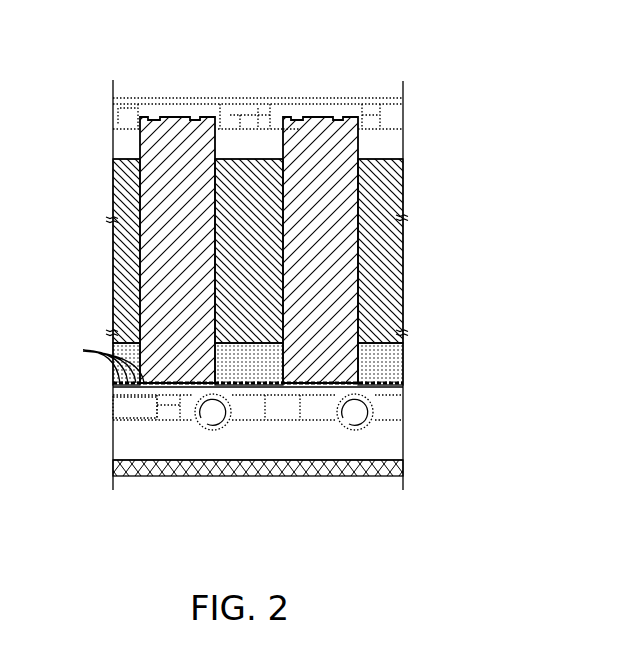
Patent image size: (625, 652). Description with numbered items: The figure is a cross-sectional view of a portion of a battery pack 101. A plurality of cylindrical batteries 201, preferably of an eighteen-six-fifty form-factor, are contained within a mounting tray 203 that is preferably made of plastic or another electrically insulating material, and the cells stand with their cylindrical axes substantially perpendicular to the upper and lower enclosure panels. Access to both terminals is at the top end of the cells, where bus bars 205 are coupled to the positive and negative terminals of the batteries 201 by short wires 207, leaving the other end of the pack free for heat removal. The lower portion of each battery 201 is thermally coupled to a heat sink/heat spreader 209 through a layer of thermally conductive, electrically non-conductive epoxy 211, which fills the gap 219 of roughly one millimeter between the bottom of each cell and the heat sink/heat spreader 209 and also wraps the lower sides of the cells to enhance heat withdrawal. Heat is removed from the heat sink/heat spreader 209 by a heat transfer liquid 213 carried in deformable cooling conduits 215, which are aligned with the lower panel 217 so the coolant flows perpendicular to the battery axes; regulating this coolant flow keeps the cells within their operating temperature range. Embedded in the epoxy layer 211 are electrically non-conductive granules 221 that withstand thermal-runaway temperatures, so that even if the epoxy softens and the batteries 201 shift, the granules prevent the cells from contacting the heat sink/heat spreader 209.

The battery pack 101 is at (479, 91).
The batteries 201 is at (193, 250).
The mounting tray 203 is at (390, 273).
The bus bars 205 is at (294, 108).
The wires 207 is at (332, 113).
The heat sink/heat spreader 209 is at (377, 393).
The thermally conductive epoxy layer 211 is at (393, 363).
The heat transfer liquid 213 is at (210, 413).
The cooling conduits 215 is at (200, 423).
The lower panel 217 is at (350, 471).
The gap 219 is at (376, 377).
The granules 221 is at (83, 350).